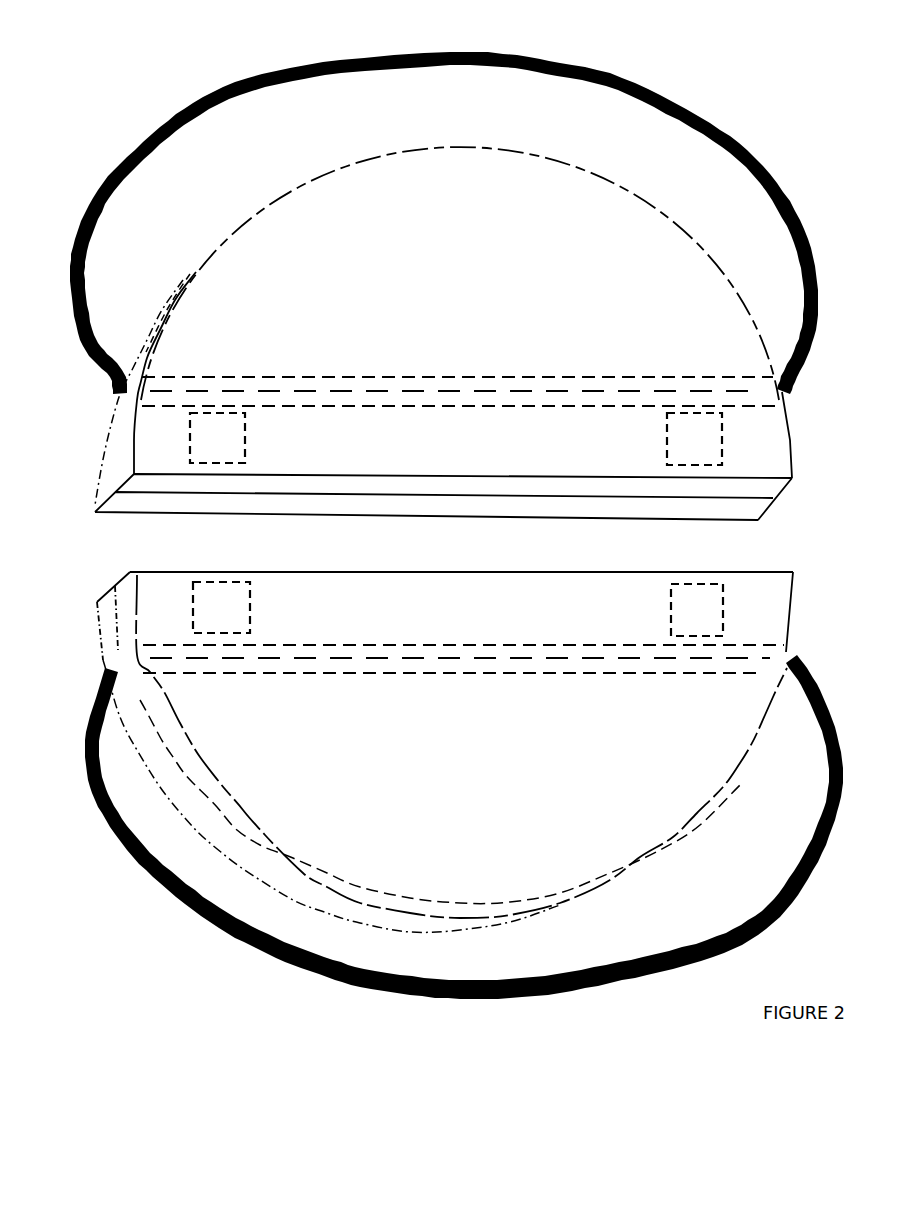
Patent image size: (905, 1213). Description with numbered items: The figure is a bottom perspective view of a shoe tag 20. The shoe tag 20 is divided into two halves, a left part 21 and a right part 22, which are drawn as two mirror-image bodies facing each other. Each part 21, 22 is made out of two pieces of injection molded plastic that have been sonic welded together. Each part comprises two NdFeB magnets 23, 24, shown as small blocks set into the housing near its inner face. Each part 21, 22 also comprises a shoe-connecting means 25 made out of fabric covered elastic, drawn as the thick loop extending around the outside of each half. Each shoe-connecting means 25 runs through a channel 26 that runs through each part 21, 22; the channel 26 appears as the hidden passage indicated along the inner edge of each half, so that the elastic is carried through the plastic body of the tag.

The shoe tag 20 is at (63, 114).
The left part 21 is at (697, 813).
The right part 22 is at (347, 166).
The NdFeB magnet 23 is at (215, 610).
The NdFeB magnet 24 is at (693, 604).
The shoe-connecting means 25 is at (235, 82).
The channel 26 is at (460, 655).